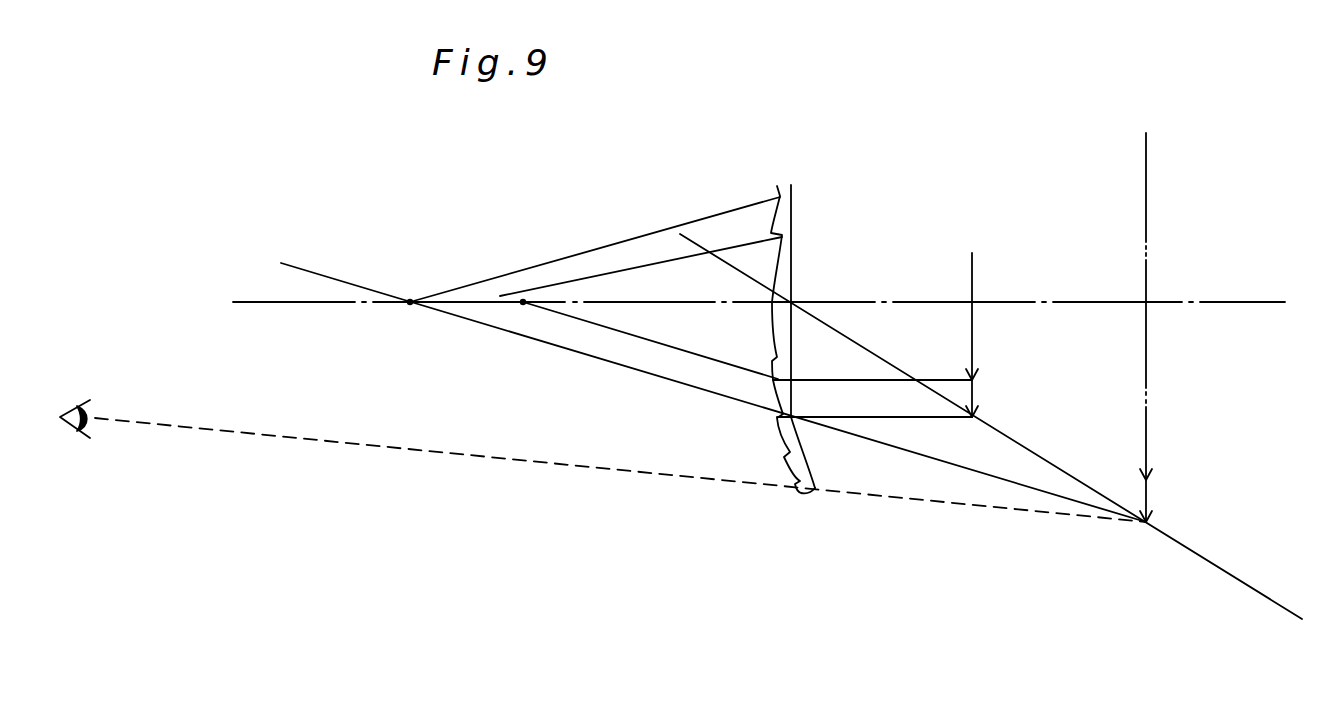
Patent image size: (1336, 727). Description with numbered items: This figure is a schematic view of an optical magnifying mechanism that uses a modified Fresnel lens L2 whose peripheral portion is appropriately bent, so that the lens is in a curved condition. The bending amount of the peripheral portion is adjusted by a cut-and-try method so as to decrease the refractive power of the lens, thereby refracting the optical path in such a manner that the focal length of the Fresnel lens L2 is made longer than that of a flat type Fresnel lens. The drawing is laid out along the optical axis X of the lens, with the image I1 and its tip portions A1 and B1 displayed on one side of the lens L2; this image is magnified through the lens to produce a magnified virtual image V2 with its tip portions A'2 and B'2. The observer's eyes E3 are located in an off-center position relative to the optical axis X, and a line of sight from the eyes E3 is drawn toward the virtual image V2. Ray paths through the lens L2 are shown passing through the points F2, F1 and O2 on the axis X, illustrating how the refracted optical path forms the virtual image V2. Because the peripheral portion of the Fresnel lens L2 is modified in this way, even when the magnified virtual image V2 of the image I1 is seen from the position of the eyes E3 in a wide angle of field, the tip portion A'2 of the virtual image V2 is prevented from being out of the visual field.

The optical axis X is at (738, 304).
The modified Fresnel lens L2 is at (791, 309).
The focal point of lens F2 is at (416, 325).
The focal point of lens F1 is at (534, 321).
The center of lens O2 is at (815, 284).
The image I1 is at (976, 270).
The tip portion of image B1 is at (901, 379).
The tip portion of image A1 is at (903, 409).
The magnified virtual image V2 is at (1171, 322).
The tip portion of virtual image B'2 is at (1178, 476).
The tip portion of virtual image A'2 is at (1178, 511).
The eyes of observer E3 is at (603, 438).